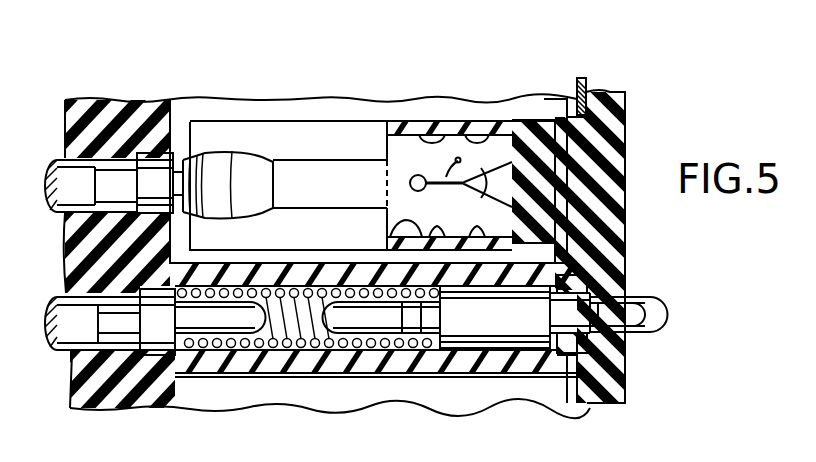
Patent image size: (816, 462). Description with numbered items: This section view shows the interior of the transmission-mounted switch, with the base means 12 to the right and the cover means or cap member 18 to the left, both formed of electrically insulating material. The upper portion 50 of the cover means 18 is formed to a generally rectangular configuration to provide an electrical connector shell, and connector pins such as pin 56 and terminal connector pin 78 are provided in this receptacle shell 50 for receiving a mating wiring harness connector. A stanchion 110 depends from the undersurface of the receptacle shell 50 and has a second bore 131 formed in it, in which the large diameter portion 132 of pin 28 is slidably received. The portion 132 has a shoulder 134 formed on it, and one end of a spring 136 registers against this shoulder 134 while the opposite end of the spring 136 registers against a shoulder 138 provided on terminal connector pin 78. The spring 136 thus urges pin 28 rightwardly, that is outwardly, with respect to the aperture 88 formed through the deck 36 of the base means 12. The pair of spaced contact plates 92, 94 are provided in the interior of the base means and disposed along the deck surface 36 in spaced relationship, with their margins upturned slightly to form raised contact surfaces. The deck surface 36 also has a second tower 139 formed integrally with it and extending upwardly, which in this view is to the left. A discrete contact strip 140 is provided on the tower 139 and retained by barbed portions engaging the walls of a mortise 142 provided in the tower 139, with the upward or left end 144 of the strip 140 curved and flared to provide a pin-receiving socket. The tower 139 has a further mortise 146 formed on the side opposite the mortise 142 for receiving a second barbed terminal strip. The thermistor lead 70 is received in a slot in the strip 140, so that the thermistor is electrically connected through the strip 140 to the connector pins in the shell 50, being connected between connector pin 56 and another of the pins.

The base means 12 is at (641, 150).
The cover means 18 is at (236, 90).
The pin 28 is at (647, 295).
The deck surface 36 is at (567, 357).
The upper shell portion 50 is at (88, 100).
The connector pin 56 is at (50, 158).
The electrical lead 70 is at (440, 165).
The terminal connector pin 78 is at (63, 358).
The aperture 88 is at (630, 337).
The contact plate 92 is at (578, 80).
The contact plate 94 is at (587, 373).
The stanchion 110 is at (322, 377).
The second bore 131 is at (459, 340).
The large diameter portion 132 is at (522, 377).
The shoulder 134 is at (405, 333).
The spring 136 is at (268, 375).
The shoulder 138 is at (190, 360).
The second tower 139 is at (470, 120).
The contact strip 140 is at (318, 153).
The mortise 142 is at (399, 222).
The socket forming portion 144 is at (217, 153).
The mortise 146 is at (485, 190).